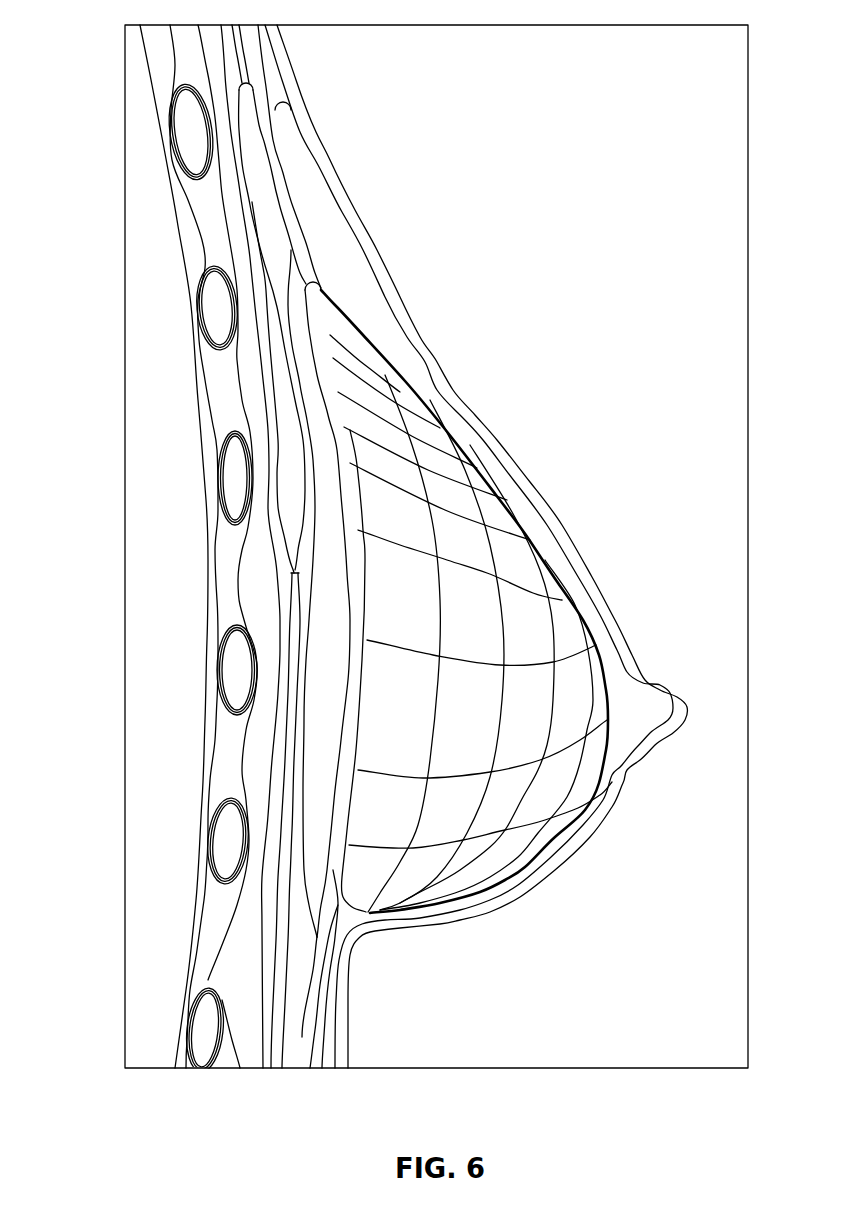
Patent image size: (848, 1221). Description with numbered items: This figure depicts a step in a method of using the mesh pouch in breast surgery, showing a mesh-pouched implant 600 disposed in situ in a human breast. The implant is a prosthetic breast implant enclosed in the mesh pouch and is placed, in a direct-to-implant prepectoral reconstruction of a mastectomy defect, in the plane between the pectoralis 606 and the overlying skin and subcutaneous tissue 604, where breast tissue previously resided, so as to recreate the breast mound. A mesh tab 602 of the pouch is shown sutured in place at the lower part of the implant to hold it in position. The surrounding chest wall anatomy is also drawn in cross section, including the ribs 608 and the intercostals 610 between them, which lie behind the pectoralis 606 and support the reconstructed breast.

The mesh-pouched implant 600 is at (520, 537).
The mesh tab 602 is at (365, 917).
The skin and subcutaneous tissue 604 is at (425, 362).
The pectoralis 606 is at (258, 125).
The ribs 608 is at (225, 487).
The intercostals 610 is at (217, 402).